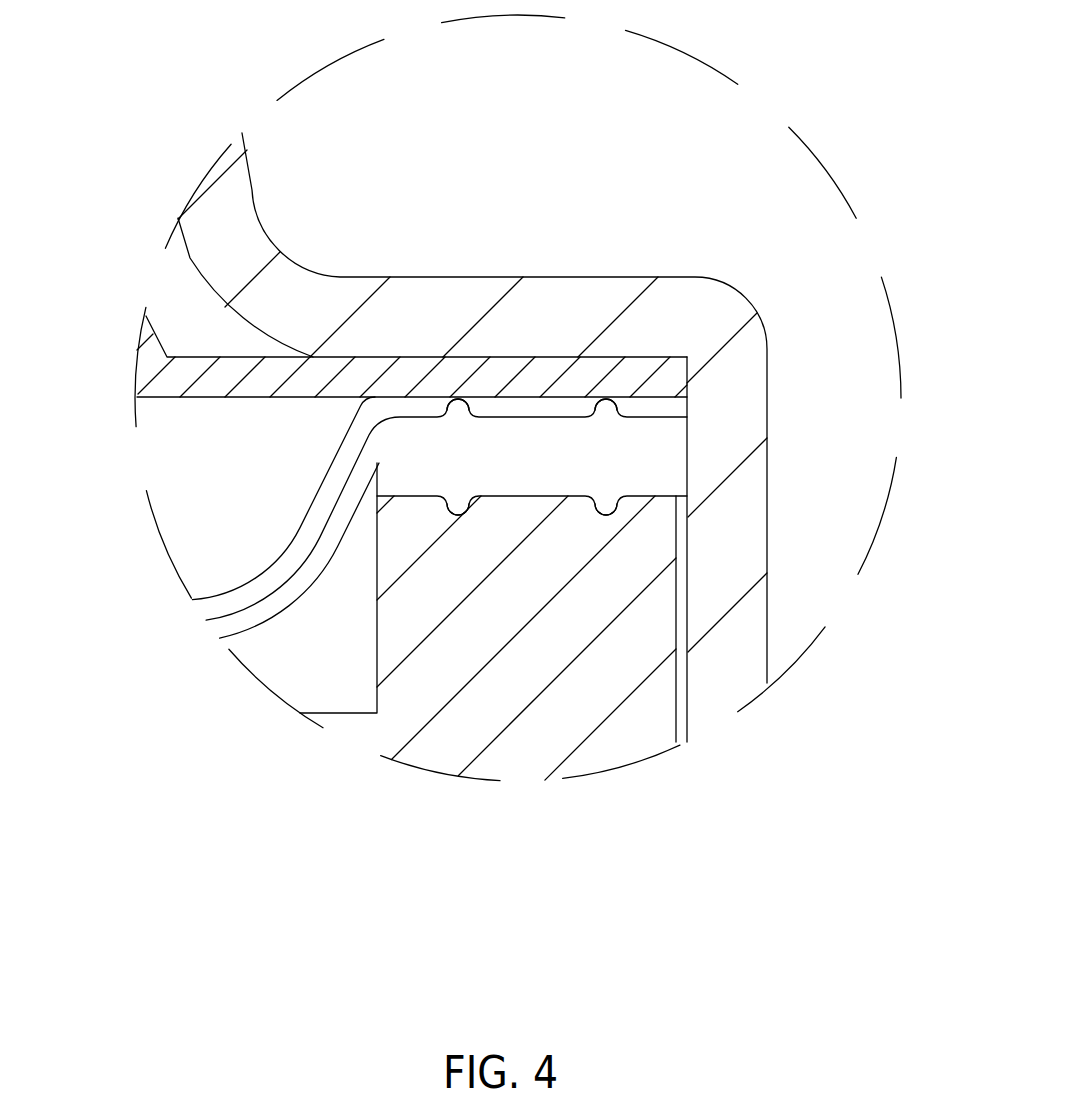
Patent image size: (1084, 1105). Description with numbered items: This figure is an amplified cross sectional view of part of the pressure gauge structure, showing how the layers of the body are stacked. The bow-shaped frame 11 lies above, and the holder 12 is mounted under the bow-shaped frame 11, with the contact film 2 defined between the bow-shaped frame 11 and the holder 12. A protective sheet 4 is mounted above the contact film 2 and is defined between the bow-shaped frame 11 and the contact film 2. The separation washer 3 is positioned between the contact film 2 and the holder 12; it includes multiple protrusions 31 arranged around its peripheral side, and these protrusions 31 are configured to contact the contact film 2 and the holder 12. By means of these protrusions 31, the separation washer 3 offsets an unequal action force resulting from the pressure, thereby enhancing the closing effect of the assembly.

The bow-shaped frame 11 is at (441, 305).
The holder 12 is at (490, 690).
The contact film 2 is at (305, 527).
The separation washer 3 is at (290, 595).
The protrusions 31 is at (620, 406).
The protective sheet 4 is at (637, 372).